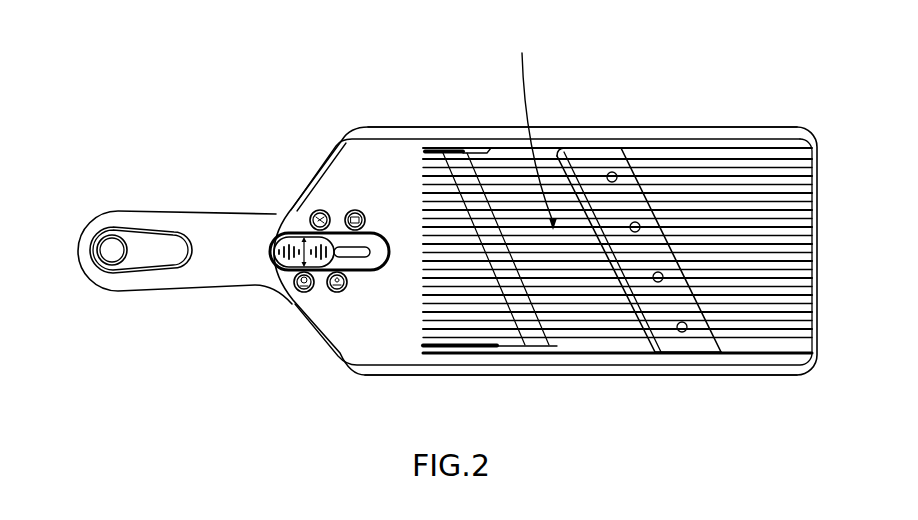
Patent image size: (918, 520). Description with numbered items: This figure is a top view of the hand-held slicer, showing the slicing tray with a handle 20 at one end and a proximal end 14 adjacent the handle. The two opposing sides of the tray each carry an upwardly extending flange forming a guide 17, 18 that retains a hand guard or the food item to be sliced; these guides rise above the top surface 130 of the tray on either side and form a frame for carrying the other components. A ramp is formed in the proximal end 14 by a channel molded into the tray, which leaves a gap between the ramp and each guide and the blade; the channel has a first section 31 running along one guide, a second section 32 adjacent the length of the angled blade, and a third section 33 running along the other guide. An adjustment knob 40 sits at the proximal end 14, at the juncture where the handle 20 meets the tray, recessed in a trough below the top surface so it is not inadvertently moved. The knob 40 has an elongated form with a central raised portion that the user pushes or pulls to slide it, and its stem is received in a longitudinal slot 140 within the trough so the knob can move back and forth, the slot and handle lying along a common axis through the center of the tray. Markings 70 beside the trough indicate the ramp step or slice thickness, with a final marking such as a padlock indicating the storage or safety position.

The proximal end 14 is at (370, 170).
The guide 17 is at (692, 131).
The guide 18 is at (695, 367).
The handle 20 is at (171, 220).
The adjustment knob 40 is at (292, 239).
The longitudinal slot 140 is at (345, 252).
The markings 70 is at (330, 291).
The first section 31 is at (478, 143).
The second section 32 is at (596, 207).
The third section 33 is at (497, 354).
The top surface 130 is at (533, 130).